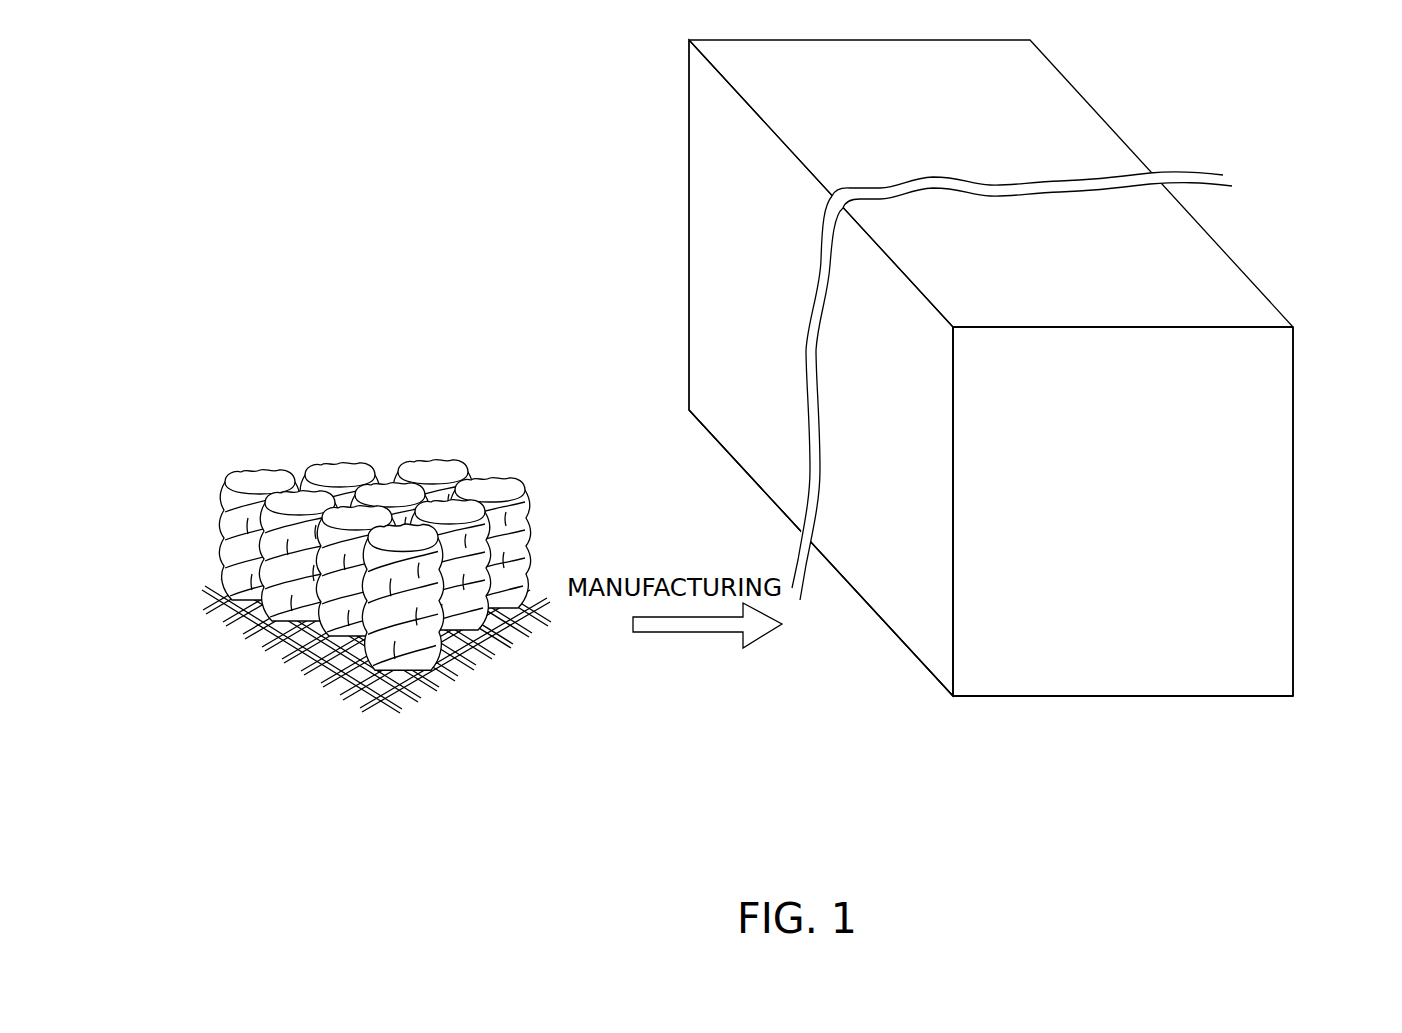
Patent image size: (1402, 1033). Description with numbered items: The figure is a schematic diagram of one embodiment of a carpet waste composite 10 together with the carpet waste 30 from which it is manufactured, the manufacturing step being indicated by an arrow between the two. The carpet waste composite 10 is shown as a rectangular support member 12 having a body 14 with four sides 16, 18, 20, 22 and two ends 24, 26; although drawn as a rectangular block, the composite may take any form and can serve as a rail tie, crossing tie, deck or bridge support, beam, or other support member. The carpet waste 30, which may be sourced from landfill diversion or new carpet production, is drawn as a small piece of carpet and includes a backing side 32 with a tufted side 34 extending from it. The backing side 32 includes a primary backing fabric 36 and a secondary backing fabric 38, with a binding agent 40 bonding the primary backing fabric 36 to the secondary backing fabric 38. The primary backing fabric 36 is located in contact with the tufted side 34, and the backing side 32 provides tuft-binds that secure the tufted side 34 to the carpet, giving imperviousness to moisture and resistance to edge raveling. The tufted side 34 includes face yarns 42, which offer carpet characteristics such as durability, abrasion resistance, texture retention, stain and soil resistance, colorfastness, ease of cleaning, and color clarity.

The carpet waste composite 10 is at (998, 423).
The rectangular support member 12 is at (1076, 711).
The body 14 is at (1295, 542).
The side 16 is at (1143, 327).
The side 18 is at (1295, 452).
The side 20 is at (1170, 696).
The side 22 is at (953, 586).
The end 24 is at (962, 400).
The end 26 is at (697, 226).
The carpet waste 30 is at (363, 579).
The backing side 32 is at (362, 654).
The tufted side 34 is at (362, 453).
The primary backing fabric 36 is at (480, 665).
The secondary backing fabric 38 is at (293, 663).
The binding agent 40 is at (228, 628).
The face yarns 42 is at (527, 545).